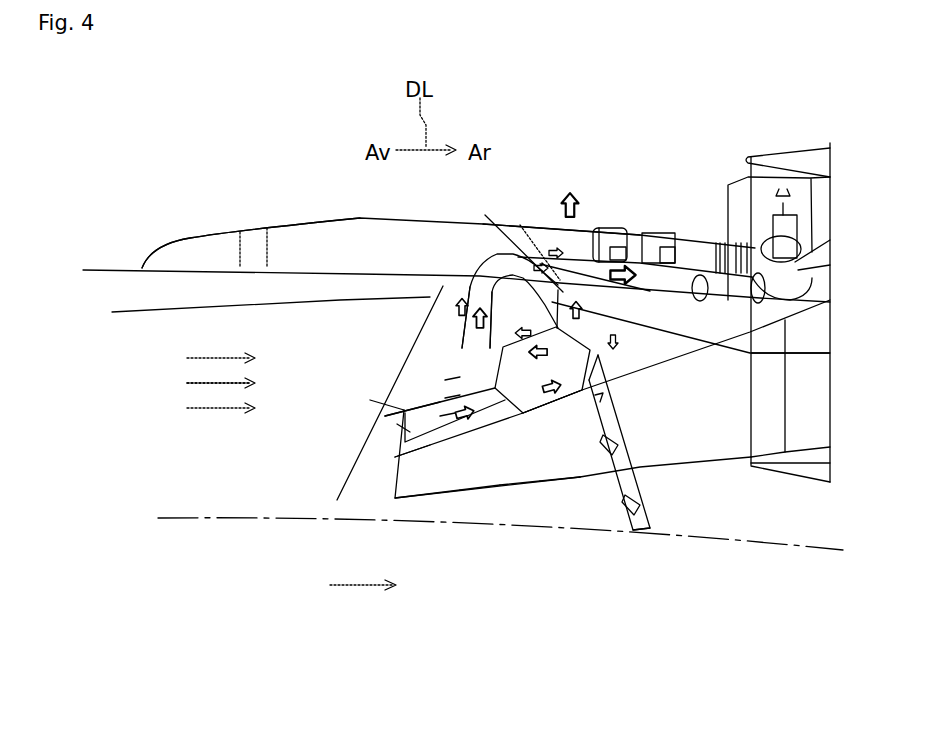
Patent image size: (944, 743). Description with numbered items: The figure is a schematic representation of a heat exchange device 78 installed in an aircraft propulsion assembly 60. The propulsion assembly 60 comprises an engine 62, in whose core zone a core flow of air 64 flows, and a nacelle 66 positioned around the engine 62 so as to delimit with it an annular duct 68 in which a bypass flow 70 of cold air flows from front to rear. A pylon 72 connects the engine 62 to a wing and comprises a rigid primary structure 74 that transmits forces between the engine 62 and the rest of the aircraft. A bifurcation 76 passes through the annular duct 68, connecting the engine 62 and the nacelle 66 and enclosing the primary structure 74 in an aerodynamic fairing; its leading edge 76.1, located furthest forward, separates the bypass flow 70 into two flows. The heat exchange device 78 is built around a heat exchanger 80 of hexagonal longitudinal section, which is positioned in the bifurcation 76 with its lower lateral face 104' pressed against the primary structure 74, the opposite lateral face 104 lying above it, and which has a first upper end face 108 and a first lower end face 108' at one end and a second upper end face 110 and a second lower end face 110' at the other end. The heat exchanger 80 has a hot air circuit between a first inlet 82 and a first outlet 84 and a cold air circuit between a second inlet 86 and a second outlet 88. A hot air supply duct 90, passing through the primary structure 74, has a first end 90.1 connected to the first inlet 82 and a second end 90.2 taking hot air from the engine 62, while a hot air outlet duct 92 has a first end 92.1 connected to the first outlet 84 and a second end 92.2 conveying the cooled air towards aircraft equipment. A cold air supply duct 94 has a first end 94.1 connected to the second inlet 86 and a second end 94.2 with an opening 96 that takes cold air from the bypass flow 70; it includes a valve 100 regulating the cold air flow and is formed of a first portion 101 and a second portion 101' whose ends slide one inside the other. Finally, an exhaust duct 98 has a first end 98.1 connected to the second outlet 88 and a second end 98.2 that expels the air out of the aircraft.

The propulsion assembly 60 is at (291, 192).
The engine 62 is at (826, 548).
The core flow of air 64 is at (360, 590).
The nacelle 66 is at (116, 270).
The annular duct 68 is at (247, 385).
The bypass flow 70 is at (187, 408).
The pylon 72 is at (690, 240).
The primary structure 74 is at (700, 460).
The bifurcation 76 is at (401, 372).
The leading edge 76.1 is at (397, 428).
The heat exchange device 78 is at (541, 182).
The heat exchanger 80 is at (508, 486).
The first inlet 82 is at (602, 365).
The first outlet 84 is at (438, 392).
The second inlet 86 is at (520, 398).
The second outlet 88 is at (588, 331).
The hot air supply duct 90 is at (603, 500).
The first end of hot air supply duct 90.1 is at (603, 377).
The second end of hot air supply duct 90.2 is at (668, 520).
The hot air outlet duct 92 is at (589, 258).
The first end of hot air outlet duct 92.1 is at (474, 371).
The second end of hot air outlet duct 92.2 is at (772, 220).
The cold air supply duct 94 is at (436, 428).
The first end of cold air supply duct 94.1 is at (492, 410).
The second end of cold air supply duct 94.2 is at (392, 449).
The opening 96 is at (363, 446).
The exhaust duct 98 is at (555, 272).
The first end of exhaust duct 98.1 is at (545, 288).
The second end of exhaust duct 98.2 is at (573, 212).
The valve 100 is at (374, 498).
The first portion 101 is at (385, 391).
The second portion 101' is at (385, 367).
The upper strut 104 is at (509, 257).
The lower lateral face 104' is at (553, 479).
The first upper end face 108 is at (449, 262).
The first lower end face 108' is at (367, 411).
The second upper end face 110 is at (650, 229).
The second lower end face 110' is at (648, 412).